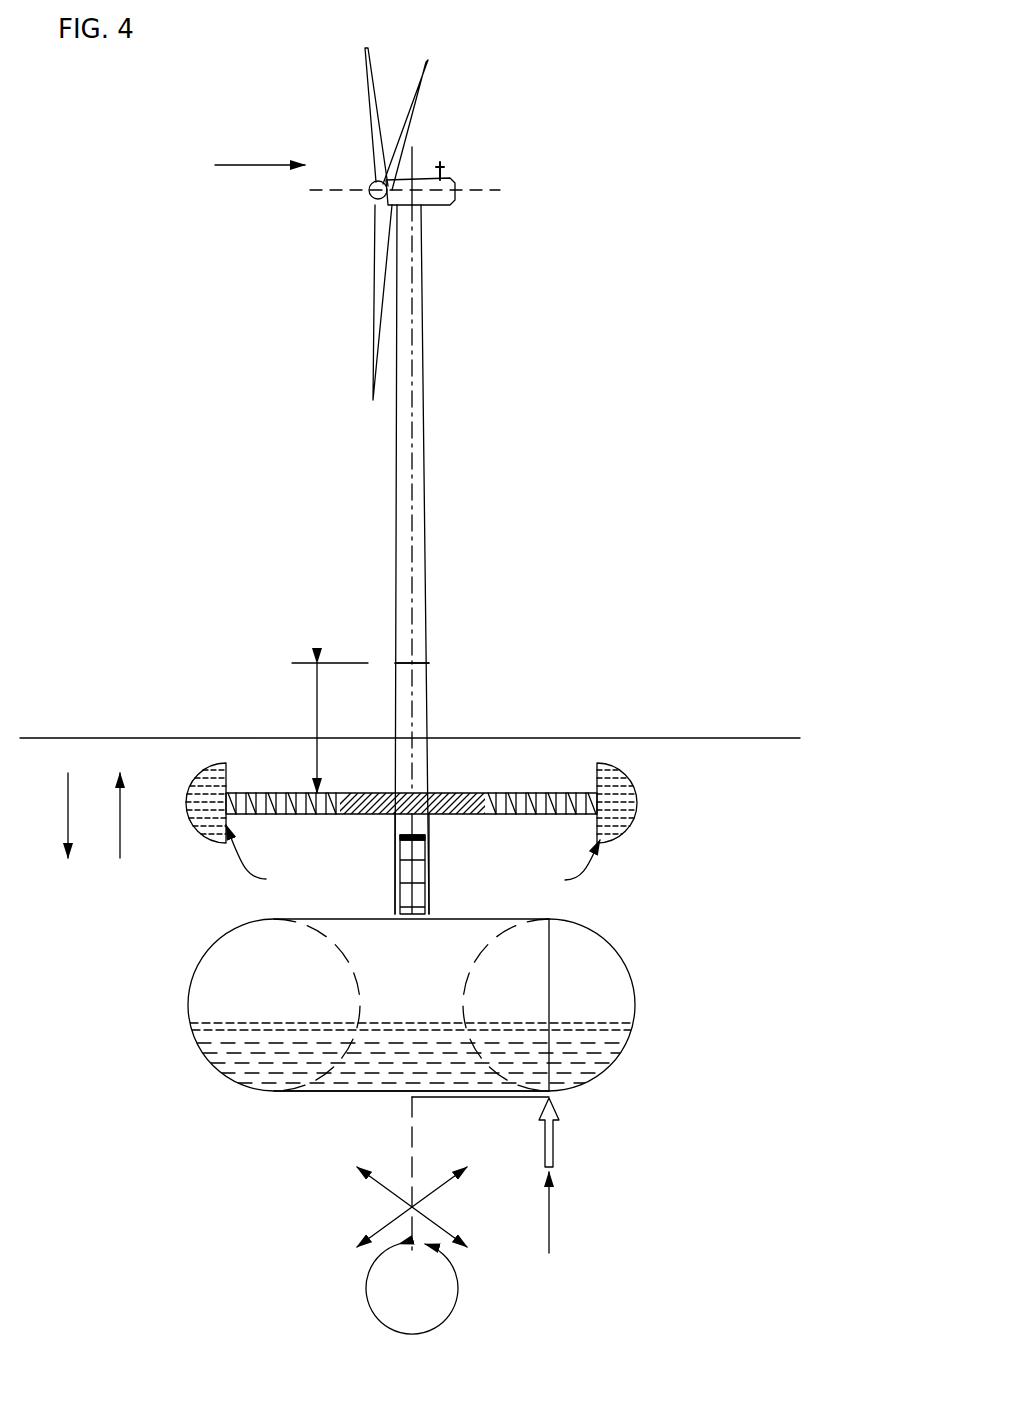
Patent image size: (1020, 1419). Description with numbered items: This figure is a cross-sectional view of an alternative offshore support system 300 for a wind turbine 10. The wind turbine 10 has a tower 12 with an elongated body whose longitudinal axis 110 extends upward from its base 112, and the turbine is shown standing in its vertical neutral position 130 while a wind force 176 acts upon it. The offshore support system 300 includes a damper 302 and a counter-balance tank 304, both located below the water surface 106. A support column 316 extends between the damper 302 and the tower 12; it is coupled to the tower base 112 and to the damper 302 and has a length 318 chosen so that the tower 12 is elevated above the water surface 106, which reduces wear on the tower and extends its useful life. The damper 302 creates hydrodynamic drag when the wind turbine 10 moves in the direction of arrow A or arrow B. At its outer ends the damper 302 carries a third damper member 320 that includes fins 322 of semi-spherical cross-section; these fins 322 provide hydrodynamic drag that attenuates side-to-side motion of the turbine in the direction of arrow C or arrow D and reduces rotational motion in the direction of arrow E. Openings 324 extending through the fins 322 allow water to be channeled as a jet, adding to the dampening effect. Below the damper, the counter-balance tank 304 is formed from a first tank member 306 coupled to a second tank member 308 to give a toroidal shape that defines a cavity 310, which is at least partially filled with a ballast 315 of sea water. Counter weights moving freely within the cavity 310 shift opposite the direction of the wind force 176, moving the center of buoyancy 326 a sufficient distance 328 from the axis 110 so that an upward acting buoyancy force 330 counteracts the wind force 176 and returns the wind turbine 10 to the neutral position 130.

The wind turbine 10 is at (475, 224).
The tower 12 is at (425, 503).
The water surface 106 is at (720, 735).
The longitudinal axis 110 is at (412, 785).
The base 112 is at (428, 633).
The neutral position 130 is at (455, 340).
The wind force 176 is at (250, 165).
The offshore support system 300 is at (463, 1035).
The damper 302 is at (560, 778).
The counter-balance tank 304 is at (467, 1031).
The first tank member 306 is at (332, 918).
The second tank member 308 is at (325, 1092).
The cavity 310 is at (408, 993).
The ballast 315 is at (433, 1063).
The support column 316 is at (430, 682).
The length 318 is at (318, 688).
The third damper member 320 is at (216, 821).
The fins 322 is at (202, 840).
The openings 324 is at (272, 859).
The center of buoyancy 326 is at (549, 1215).
The distance 328 is at (487, 1097).
The buoyancy force 330 is at (553, 1150).
The arrow A is at (122, 820).
The arrow B is at (70, 797).
The arrow C is at (437, 1225).
The arrow D is at (437, 1197).
The arrow E is at (458, 1290).